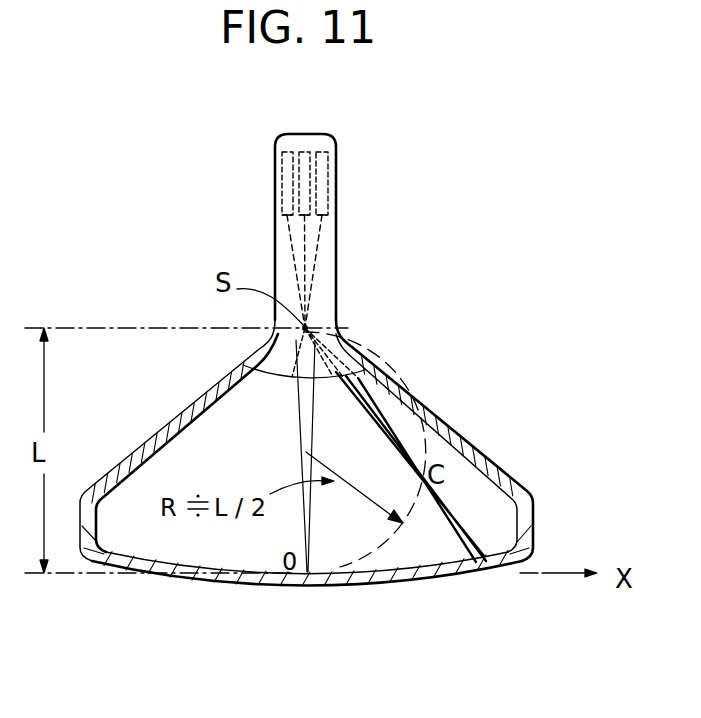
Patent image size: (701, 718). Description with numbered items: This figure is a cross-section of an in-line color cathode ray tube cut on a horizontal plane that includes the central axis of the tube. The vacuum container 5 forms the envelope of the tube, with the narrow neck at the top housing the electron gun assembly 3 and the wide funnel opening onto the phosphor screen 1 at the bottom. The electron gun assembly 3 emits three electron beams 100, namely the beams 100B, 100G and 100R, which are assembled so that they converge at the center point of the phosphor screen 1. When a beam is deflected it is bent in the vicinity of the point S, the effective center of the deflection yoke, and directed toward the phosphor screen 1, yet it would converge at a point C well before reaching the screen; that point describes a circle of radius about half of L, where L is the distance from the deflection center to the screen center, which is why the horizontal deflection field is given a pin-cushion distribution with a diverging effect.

The phosphor screen 1 is at (262, 572).
The electron gun assembly 3 is at (328, 172).
The vacuum container 5 is at (450, 428).
The electron beams 100 is at (411, 393).
The blue electron beam 100B is at (333, 228).
The green electron beam 100G is at (335, 258).
The red electron beam 100R is at (336, 288).